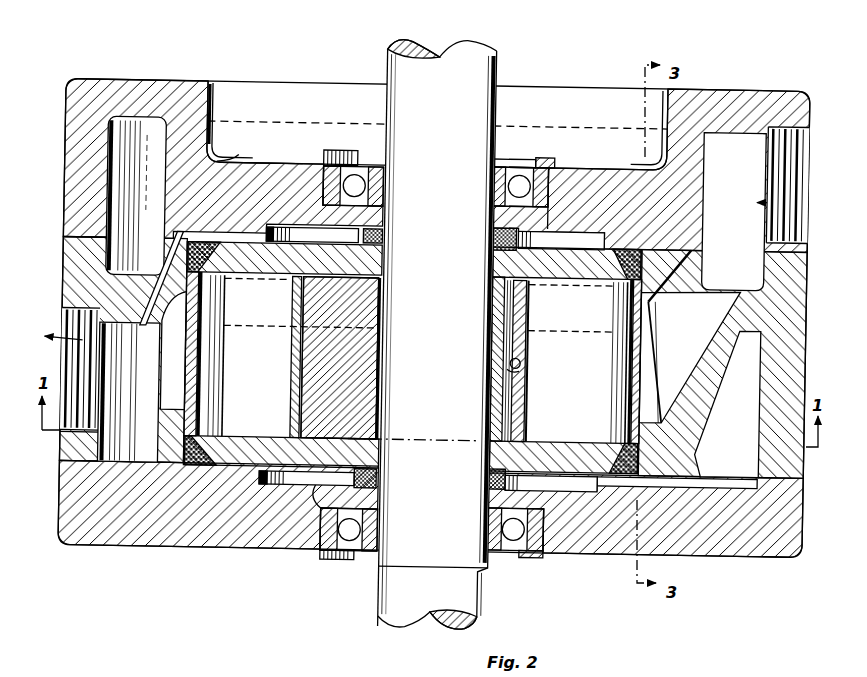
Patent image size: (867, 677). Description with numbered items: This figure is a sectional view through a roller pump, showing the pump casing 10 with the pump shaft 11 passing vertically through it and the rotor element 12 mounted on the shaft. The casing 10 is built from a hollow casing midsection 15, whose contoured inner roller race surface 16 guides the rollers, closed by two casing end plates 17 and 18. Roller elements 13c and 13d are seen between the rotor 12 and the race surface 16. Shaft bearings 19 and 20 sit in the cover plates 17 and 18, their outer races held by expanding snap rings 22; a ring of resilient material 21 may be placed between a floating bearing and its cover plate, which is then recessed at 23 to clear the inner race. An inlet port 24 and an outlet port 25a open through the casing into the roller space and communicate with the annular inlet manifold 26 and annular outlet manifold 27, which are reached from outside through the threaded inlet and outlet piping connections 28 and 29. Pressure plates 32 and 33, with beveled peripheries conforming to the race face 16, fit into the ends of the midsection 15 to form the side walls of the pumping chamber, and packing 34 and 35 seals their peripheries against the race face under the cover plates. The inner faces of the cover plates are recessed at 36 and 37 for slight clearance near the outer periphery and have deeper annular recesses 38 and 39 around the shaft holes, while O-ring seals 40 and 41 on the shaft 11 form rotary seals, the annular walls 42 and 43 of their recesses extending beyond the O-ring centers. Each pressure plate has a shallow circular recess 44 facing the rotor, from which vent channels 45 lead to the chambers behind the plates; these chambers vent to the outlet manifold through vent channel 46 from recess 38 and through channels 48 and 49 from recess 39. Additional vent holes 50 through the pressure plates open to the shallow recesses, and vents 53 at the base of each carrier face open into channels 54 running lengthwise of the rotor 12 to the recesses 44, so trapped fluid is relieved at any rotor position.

The pump casing 10 is at (73, 70).
The pump shaft 11 is at (407, 42).
The rotor element 12 is at (317, 421).
The roller element 13c is at (588, 365).
The roller element 13d is at (232, 366).
The casing midsection 15 is at (795, 319).
The inner roller race surface 16 is at (637, 352).
The casing end plate 17 is at (775, 552).
The casing end plate 18 is at (728, 92).
The shaft bearing 19 is at (499, 565).
The shaft bearing 20 is at (505, 162).
The ring of resilient material 21 is at (558, 165).
The expanding snap ring 22 is at (537, 160).
The recess 23 is at (528, 237).
The inlet port 24 is at (645, 390).
The outlet port 25a is at (170, 383).
The annular inlet manifold 26 is at (745, 132).
The annular outlet manifold 27 is at (118, 470).
The inlet piping connection 28 is at (806, 172).
The outlet piping connection 29 is at (62, 322).
The pressure plate 32 is at (232, 466).
The pressure plate 33 is at (255, 182).
The packing 34 is at (185, 468).
The packing 35 is at (195, 222).
The recess 36 is at (208, 468).
The recess 37 is at (270, 255).
The annular recess 38 is at (570, 562).
The annular recess 39 is at (577, 200).
The O-ring seal 40 is at (377, 160).
The O-ring seal 41 is at (297, 488).
The annular wall 42 is at (350, 238).
The annular wall 43 is at (355, 483).
The circular recess 44 is at (353, 279).
The vent channel 45 is at (537, 282).
The vent channel 46 is at (690, 480).
The vent channel 48 is at (235, 160).
The vent channel 49 is at (147, 323).
The vent hole 50 is at (226, 312).
The vent 53 is at (522, 360).
The channel 54 is at (513, 384).